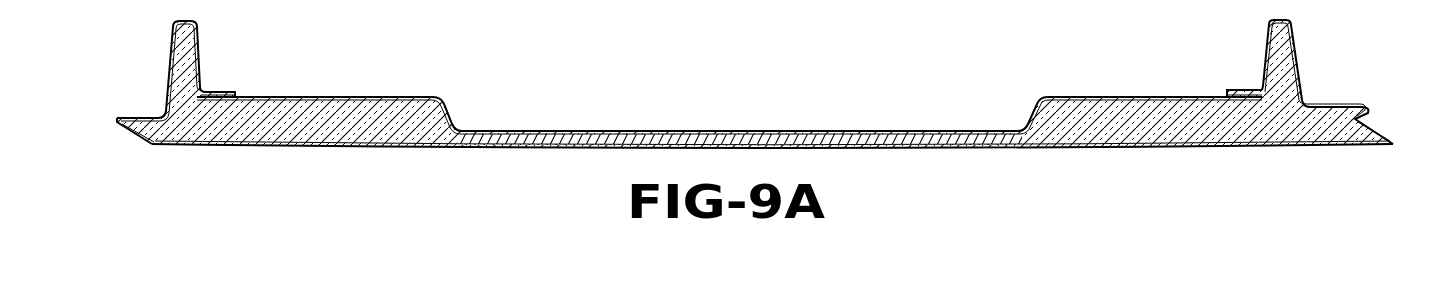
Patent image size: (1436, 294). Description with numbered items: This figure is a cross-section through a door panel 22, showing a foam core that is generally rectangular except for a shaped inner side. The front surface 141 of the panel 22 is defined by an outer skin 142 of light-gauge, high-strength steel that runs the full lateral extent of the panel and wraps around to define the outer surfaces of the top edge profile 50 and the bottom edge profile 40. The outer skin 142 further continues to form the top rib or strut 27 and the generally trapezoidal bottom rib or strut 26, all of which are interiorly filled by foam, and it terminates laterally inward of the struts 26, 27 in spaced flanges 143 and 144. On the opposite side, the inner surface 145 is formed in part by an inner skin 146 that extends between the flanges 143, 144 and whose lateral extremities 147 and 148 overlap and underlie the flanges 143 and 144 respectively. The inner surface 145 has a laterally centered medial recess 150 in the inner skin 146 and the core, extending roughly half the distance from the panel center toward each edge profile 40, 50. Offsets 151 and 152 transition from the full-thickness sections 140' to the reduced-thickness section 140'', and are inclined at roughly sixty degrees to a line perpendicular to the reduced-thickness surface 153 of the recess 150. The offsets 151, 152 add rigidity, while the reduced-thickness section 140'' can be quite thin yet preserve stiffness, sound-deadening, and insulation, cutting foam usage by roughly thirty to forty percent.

The panel 22 is at (1105, 97).
The bottom rib or strut 26 is at (1280, 33).
The top rib or strut 27 is at (183, 38).
The bottom edge profile 40 is at (1378, 130).
The top edge profile 50 is at (130, 136).
The full-thickness sections 140' is at (755, 74).
The reduced-thickness section 140'' is at (740, 170).
The front surface 141 is at (1045, 157).
The outer skin 142 is at (503, 149).
The flange 143 is at (1250, 89).
The flange 144 is at (224, 92).
The inner surface 145 is at (1062, 85).
The inner skin 146 is at (390, 97).
The lateral extremity 147 is at (1260, 105).
The lateral extremity 148 is at (197, 98).
The medial recess 150 is at (810, 120).
The offset 151 is at (1033, 120).
The offset 152 is at (450, 117).
The reduced-thickness surface 153 is at (637, 131).